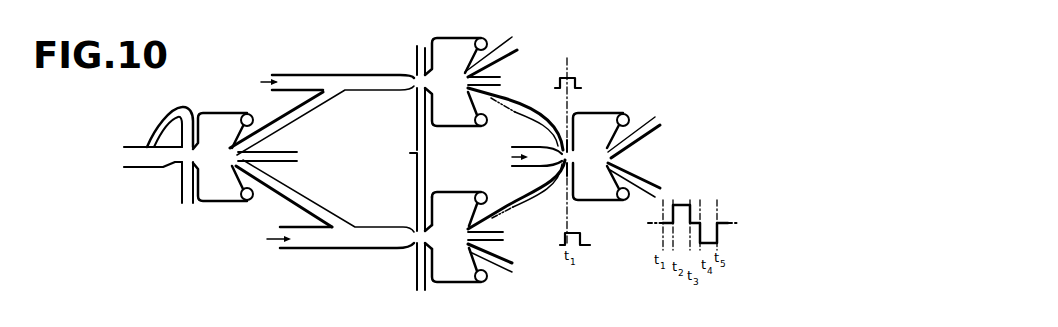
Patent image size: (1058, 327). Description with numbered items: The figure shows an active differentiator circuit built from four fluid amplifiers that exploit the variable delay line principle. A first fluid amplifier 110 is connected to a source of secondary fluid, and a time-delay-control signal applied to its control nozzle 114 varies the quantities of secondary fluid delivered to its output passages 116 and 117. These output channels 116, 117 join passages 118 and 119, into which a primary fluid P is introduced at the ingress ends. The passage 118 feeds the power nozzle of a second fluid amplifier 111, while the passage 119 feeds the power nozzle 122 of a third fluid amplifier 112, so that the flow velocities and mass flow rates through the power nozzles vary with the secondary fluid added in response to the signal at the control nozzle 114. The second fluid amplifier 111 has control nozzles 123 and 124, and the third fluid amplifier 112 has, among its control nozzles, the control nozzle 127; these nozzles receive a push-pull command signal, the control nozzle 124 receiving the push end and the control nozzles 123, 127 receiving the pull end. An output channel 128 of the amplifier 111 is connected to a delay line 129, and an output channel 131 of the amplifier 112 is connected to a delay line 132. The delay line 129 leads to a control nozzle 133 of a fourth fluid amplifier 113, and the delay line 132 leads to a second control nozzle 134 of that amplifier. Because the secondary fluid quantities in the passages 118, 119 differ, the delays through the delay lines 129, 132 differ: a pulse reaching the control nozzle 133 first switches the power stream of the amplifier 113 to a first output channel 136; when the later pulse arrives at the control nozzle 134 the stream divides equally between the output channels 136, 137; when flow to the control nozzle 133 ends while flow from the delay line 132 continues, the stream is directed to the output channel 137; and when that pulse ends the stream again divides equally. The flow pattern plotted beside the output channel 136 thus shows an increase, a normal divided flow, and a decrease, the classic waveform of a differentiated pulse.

The first fluid amplifier 110 is at (189, 209).
The second fluid amplifier 111 is at (463, 36).
The third fluid amplifier 112 is at (414, 86).
The fourth fluid amplifier 113 is at (588, 203).
The control nozzle 114 is at (182, 180).
The output passage 116 is at (293, 121).
The output passage 117 is at (294, 193).
The passage 118 is at (310, 84).
The passage 119 is at (366, 240).
The power nozzle 122 is at (414, 239).
The control nozzle 123 is at (416, 73).
The control nozzle 124 is at (417, 118).
The control nozzle 127 is at (417, 276).
The output channel 128 is at (494, 102).
The delay line 129 is at (539, 104).
The output channel 131 is at (500, 221).
The delay line 132 is at (550, 191).
The control nozzle 133 is at (558, 131).
The second control nozzle 134 is at (601, 156).
The first output channel 136 is at (643, 172).
The output channel 137 is at (648, 121).